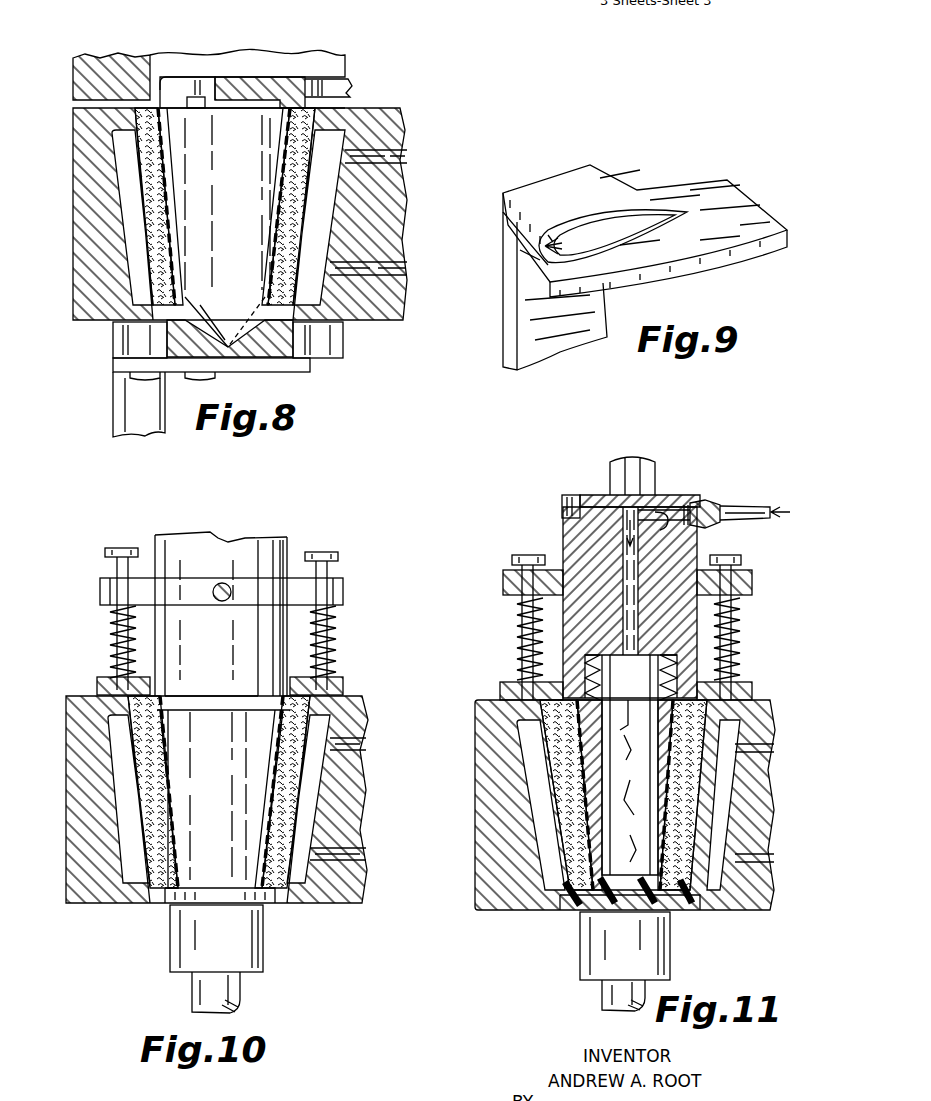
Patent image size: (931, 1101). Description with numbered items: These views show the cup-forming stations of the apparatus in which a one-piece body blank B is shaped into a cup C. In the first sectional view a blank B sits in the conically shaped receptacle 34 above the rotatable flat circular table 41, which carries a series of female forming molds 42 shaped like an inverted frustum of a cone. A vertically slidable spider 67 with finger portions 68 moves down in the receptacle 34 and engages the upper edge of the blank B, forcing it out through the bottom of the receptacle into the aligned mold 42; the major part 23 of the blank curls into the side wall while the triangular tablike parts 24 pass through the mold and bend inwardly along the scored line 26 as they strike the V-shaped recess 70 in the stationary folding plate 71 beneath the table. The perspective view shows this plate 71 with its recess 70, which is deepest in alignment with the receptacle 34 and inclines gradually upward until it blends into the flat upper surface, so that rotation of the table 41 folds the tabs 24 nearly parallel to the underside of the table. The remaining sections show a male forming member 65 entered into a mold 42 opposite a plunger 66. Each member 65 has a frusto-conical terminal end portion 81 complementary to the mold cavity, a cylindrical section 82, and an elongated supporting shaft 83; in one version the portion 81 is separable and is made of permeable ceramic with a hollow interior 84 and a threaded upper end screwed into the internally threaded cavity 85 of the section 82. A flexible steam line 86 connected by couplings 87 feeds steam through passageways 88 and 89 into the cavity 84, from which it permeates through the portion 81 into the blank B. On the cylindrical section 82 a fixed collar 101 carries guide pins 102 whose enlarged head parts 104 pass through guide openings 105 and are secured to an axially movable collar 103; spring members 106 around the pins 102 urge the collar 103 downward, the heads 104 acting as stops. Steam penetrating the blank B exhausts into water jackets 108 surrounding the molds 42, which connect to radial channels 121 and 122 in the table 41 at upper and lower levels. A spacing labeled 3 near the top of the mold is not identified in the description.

In FIG. 10, the gap between tube and sleeve 3 is at (185, 716).
In FIG. 8, the major part of the blank 23 is at (185, 160).
In FIG. 10, the major part of the blank 23 is at (270, 815).
In FIG. 8, the triangular tablike parts 24 is at (202, 325).
In FIG. 10, the triangular tablike parts 24 is at (230, 892).
In FIG. 8, the scored line 26 is at (226, 320).
In FIG. 8, the conically shaped receptacle 34 is at (163, 56).
In FIG. 8, the flat circular table 41 is at (400, 108).
In FIG. 10, the flat circular table 41 is at (340, 906).
In FIG. 11, the flat circular table 41 is at (497, 910).
In FIG. 8, the female forming mold 42 is at (152, 213).
In FIG. 10, the female forming mold 42 is at (160, 730).
In FIG. 10, the male forming member 65 is at (163, 535).
In FIG. 10, the plunger 66 is at (270, 946).
In FIG. 11, the plunger 66 is at (675, 940).
In FIG. 8, the spider 67 is at (258, 78).
In FIG. 8, the finger portions 68 is at (180, 100).
In FIG. 8, the V-shaped recess 70 is at (232, 350).
In FIG. 9, the V-shaped recess 70 is at (575, 228).
In FIG. 8, the stationary folding plate 71 is at (278, 355).
In FIG. 9, the stationary folding plate 71 is at (660, 262).
In FIG. 10, the frusto-conical terminal end portion 81 is at (258, 785).
In FIG. 11, the frusto-conical terminal end portion 81 is at (585, 730).
In FIG. 10, the cylindrical section 82 is at (288, 548).
In FIG. 11, the cylindrical section 82 is at (562, 520).
In FIG. 11, the supporting shaft 83 is at (657, 465).
In FIG. 11, the hollow interior 84 is at (612, 750).
In FIG. 11, the internally threaded cavity 85 is at (605, 660).
In FIG. 11, the flexible steam line 86 is at (755, 501).
In FIG. 11, the couplings 87 is at (714, 506).
In FIG. 11, the passageway 88 is at (660, 518).
In FIG. 11, the passageway 89 is at (640, 590).
In FIG. 10, the fixed collar 101 is at (343, 603).
In FIG. 11, the fixed collar 101 is at (505, 580).
In FIG. 10, the guide pins 102 is at (113, 566).
In FIG. 11, the guide pins 102 is at (518, 605).
In FIG. 10, the axially movable collar 103 is at (343, 684).
In FIG. 11, the axially movable collar 103 is at (503, 690).
In FIG. 10, the enlarged head parts 104 is at (122, 548).
In FIG. 11, the enlarged head parts 104 is at (528, 555).
In FIG. 10, the guide openings 105 is at (100, 590).
In FIG. 11, the guide openings 105 is at (503, 583).
In FIG. 10, the spring members 106 is at (110, 626).
In FIG. 11, the spring members 106 is at (518, 648).
In FIG. 8, the water jackets 108 is at (135, 268).
In FIG. 10, the water jackets 108 is at (125, 772).
In FIG. 11, the water jackets 108 is at (535, 800).
In FIG. 8, the radial channels 121 is at (398, 163).
In FIG. 10, the radial channels 121 is at (343, 746).
In FIG. 8, the radial channels 122 is at (400, 272).
In FIG. 10, the radial channels 122 is at (335, 858).
In FIG. 8, the body blank B is at (170, 178).
In FIG. 10, the body blank B is at (160, 795).
In FIG. 11, the cup C is at (577, 905).